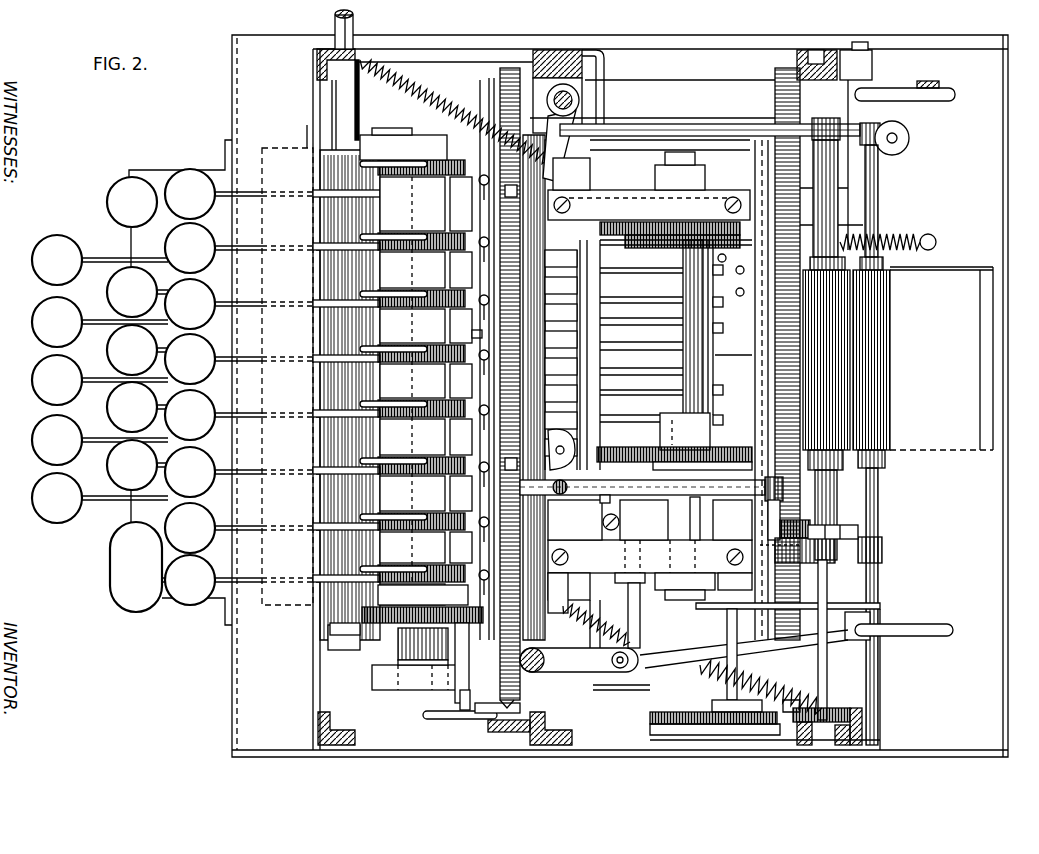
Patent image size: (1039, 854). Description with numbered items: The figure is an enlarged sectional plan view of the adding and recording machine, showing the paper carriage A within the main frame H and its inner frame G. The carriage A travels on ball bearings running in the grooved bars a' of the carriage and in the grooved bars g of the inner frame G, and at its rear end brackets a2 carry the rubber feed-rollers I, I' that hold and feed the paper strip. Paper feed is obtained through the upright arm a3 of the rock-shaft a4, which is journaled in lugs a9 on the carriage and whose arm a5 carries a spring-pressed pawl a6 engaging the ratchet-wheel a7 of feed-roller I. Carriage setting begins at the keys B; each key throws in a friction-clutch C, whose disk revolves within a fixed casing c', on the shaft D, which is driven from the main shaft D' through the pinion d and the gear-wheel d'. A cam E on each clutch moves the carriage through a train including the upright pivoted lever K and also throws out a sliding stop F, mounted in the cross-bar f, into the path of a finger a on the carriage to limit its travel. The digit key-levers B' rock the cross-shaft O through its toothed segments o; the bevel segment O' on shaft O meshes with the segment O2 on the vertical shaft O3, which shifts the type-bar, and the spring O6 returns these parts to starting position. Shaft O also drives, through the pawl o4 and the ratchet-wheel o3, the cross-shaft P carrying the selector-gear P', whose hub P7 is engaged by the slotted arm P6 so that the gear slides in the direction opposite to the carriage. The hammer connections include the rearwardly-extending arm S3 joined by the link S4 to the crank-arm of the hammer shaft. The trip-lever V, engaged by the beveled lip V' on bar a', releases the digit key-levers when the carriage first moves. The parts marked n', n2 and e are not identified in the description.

The paper carrier or carriage A is at (690, 289).
The fingers a is at (497, 311).
The bars a' is at (634, 384).
The brackets or extensions a2 is at (840, 125).
The upright arm a3 is at (583, 520).
The rock-shaft a4 is at (648, 498).
The arm a5 is at (768, 518).
The spring-pressed pawl a6 is at (803, 528).
The ratchet-wheel a7 is at (848, 528).
The lugs or ears a9 is at (580, 495).
The keys B is at (172, 380).
The key-levers B' is at (165, 387).
The friction-clutch C is at (421, 382).
The fixed casing c' is at (403, 145).
The shaft D is at (422, 637).
The main shaft D' is at (331, 338).
The pinion d is at (341, 639).
The gear-wheel d' is at (414, 646).
The cams E is at (393, 366).
The sliding stop F is at (461, 370).
The cross-bar f is at (485, 359).
The inner frame G is at (629, 192).
The grooved bars g is at (534, 387).
The main frame H is at (318, 64).
The feed-roller I is at (826, 350).
The feed-roller I' is at (872, 445).
The upright pivoted lever K is at (503, 735).
The link n' is at (478, 706).
The rod n2 is at (472, 666).
The cross-shaft O is at (573, 355).
The bevel gear or segment O' is at (670, 215).
The bevel gear or segment O2 is at (682, 221).
The vertical shaft O3 is at (582, 100).
The spring O6 is at (454, 112).
The segments o is at (737, 292).
The ratchet-wheel o3 is at (728, 256).
The pawl o4 is at (746, 266).
The cross-shaft P is at (676, 355).
The selector-gear P' is at (674, 441).
The right-angled arm P6 is at (600, 472).
The hub P7 is at (686, 518).
The rearwardly-extending arm S3 is at (905, 77).
The link S4 is at (938, 72).
The trip-lever V is at (469, 385).
The projecting lip V' is at (483, 324).
The stop e is at (544, 150).